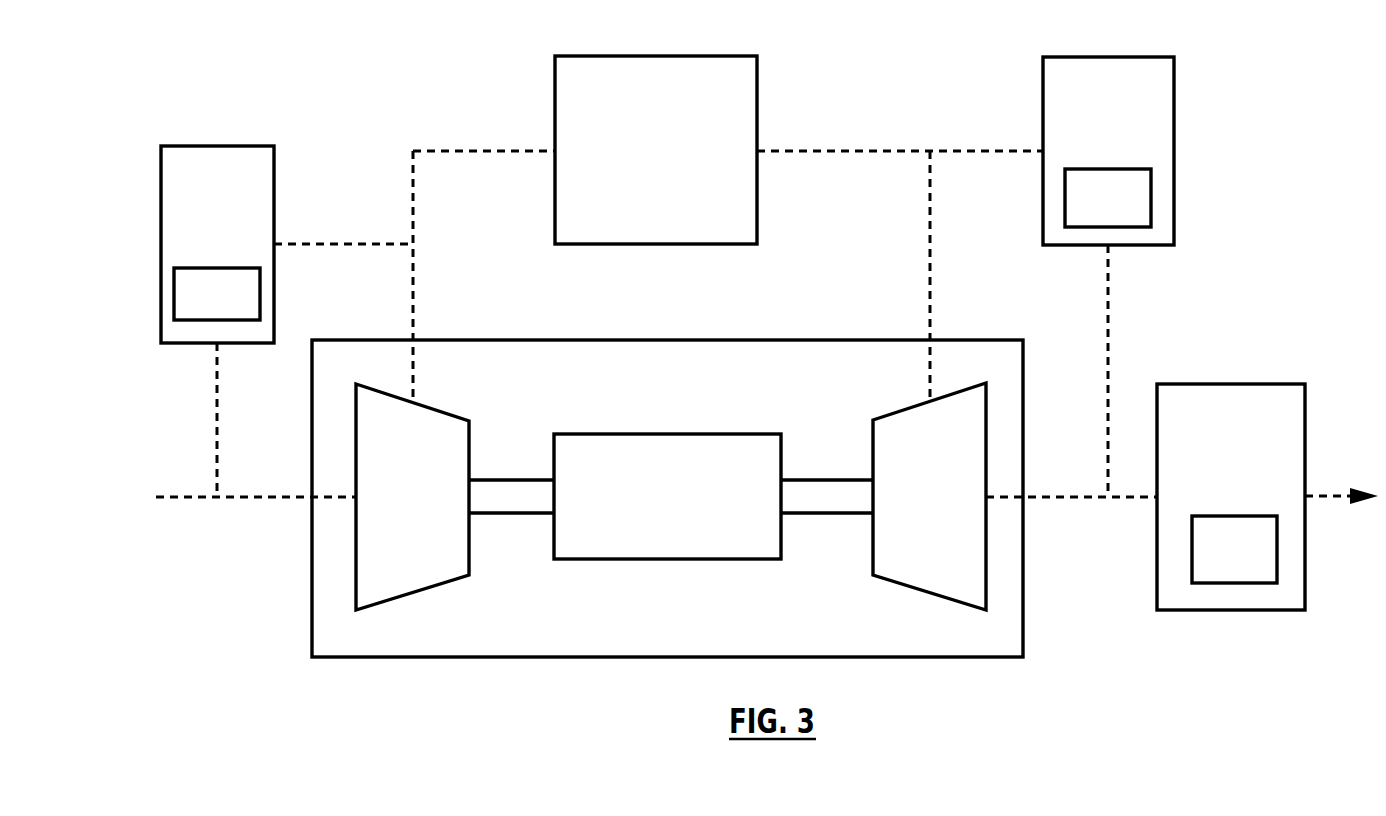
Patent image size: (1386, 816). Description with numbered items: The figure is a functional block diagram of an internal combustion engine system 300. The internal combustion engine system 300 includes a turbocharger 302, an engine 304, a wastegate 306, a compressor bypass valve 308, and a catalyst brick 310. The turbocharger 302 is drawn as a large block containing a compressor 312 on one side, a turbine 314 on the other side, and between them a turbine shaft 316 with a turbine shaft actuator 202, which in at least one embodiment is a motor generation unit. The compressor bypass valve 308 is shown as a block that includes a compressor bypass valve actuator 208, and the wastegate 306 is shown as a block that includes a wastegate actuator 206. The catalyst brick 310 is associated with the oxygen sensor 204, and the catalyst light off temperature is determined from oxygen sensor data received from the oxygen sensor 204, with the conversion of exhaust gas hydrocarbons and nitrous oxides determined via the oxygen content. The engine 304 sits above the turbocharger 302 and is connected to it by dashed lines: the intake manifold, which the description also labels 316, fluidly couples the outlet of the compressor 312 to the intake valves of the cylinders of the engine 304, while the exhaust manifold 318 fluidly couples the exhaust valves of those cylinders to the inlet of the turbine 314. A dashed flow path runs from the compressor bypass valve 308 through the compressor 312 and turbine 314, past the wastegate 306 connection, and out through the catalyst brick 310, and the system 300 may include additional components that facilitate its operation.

The internal combustion engine system 300 is at (1214, 64).
The turbocharger 302 is at (655, 408).
The engine 304 is at (640, 170).
The wastegate 306 is at (1092, 126).
The compressor bypass valve 308 is at (200, 218).
The catalyst brick 310 is at (1216, 463).
The compressor 312 is at (395, 518).
The turbine 314 is at (911, 516).
The turbine shaft 316 is at (806, 509).
The exhaust manifold 318 is at (930, 255).
The turbine shaft actuator 202 is at (655, 516).
The oxygen sensor 204 is at (1216, 563).
The wastegate actuator 206 is at (1091, 211).
The compressor bypass valve actuator 208 is at (200, 309).